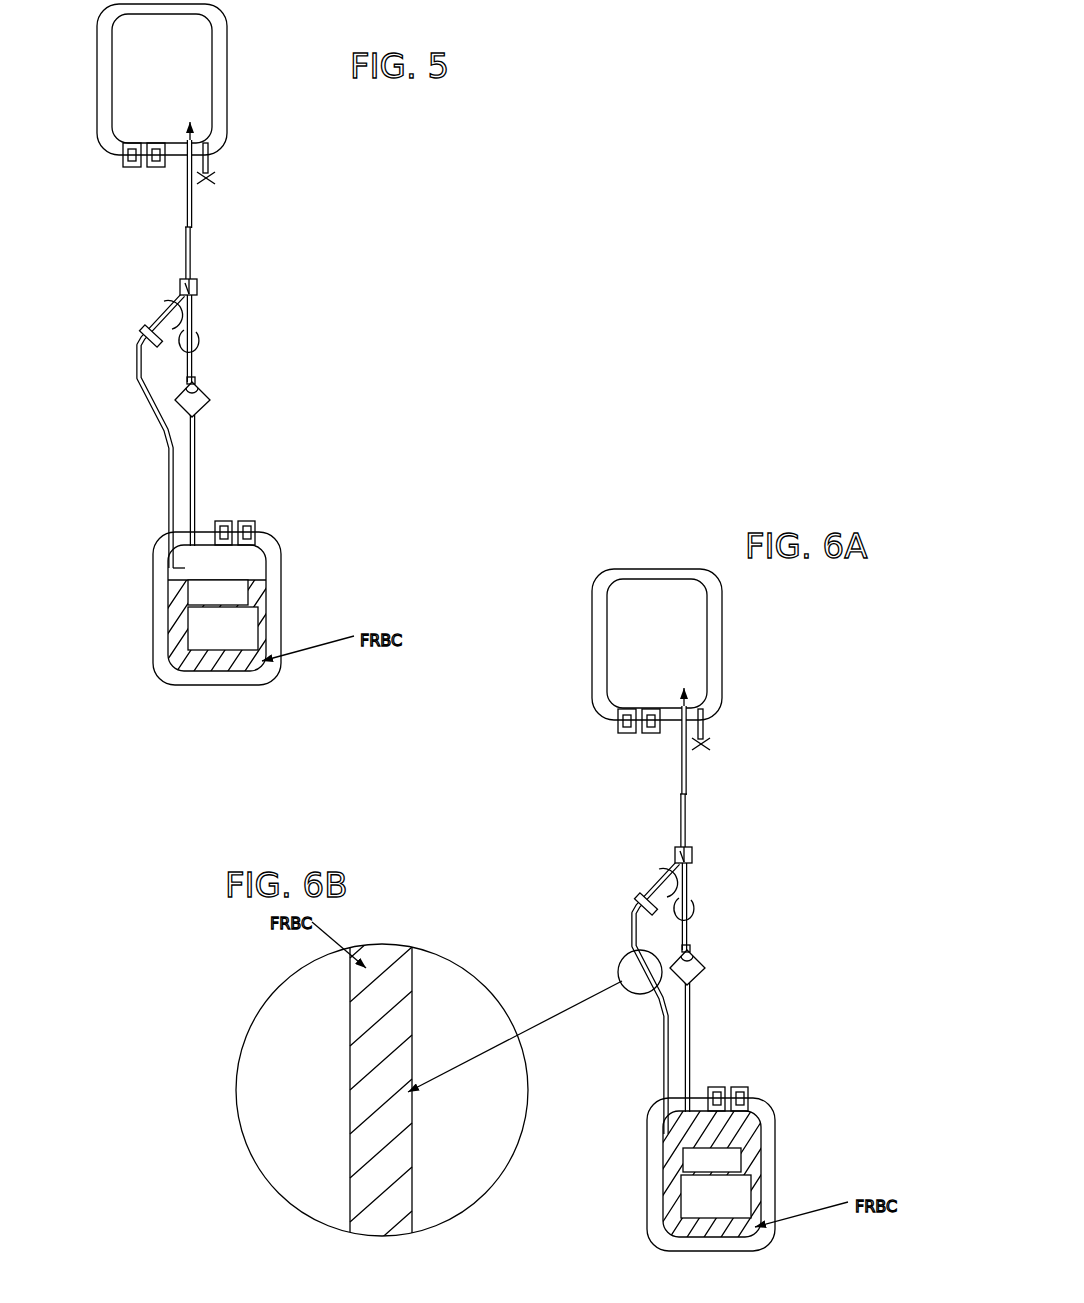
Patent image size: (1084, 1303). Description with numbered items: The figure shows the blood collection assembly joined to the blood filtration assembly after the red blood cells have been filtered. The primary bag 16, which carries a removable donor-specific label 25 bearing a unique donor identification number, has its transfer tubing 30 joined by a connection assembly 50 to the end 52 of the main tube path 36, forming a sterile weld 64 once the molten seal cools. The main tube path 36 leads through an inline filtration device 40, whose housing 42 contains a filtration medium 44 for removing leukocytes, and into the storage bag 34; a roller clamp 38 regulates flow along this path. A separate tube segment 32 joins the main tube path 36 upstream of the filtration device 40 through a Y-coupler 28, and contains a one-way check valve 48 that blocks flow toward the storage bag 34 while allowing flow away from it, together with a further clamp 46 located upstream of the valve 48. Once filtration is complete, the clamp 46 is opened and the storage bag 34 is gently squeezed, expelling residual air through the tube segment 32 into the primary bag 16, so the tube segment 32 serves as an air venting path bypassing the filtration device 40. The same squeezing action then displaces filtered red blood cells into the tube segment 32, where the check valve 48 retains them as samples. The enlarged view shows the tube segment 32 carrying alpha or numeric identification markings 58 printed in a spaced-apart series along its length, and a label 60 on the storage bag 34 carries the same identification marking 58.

In FIG. 5, the primary bag 16 is at (215, 55).
In FIG. 6A, the primary bag 16 is at (710, 620).
In FIG. 5, the donor-specific label 25 is at (256, 631).
In FIG. 6A, the donor-specific label 25 is at (748, 1196).
In FIG. 5, the Y-coupler 28 is at (196, 283).
In FIG. 6A, the Y-coupler 28 is at (691, 851).
In FIG. 5, the transfer tubing 30 is at (186, 196).
In FIG. 6A, the transfer tubing 30 is at (680, 762).
In FIG. 5, the tube segment 32 is at (141, 416).
In FIG. 6A, the tube segment 32 is at (627, 922).
In FIG. 6B, the tube segment 32 is at (414, 1025).
In FIG. 5, the storage bag 34 is at (258, 566).
In FIG. 6A, the storage bag 34 is at (753, 1133).
In FIG. 5, the main tube path 36 is at (193, 318).
In FIG. 6A, the main tube path 36 is at (688, 886).
In FIG. 5, the clamp 38 is at (200, 340).
In FIG. 6A, the clamp 38 is at (695, 907).
In FIG. 5, the filtration device 40 is at (199, 406).
In FIG. 6A, the filtration device 40 is at (694, 973).
In FIG. 5, the housing 42 is at (199, 390).
In FIG. 6A, the housing 42 is at (694, 957).
In FIG. 5, the filtration medium 44 is at (194, 386).
In FIG. 6A, the filtration medium 44 is at (689, 953).
In FIG. 5, the clamp 46 is at (160, 310).
In FIG. 6A, the clamp 46 is at (655, 877).
In FIG. 5, the one-way check valve 48 is at (148, 334).
In FIG. 6A, the one-way check valve 48 is at (643, 901).
In FIG. 5, the connection assembly 50 is at (210, 232).
In FIG. 6A, the connection assembly 50 is at (705, 798).
In FIG. 5, the end of the tube path 52 is at (186, 240).
In FIG. 6A, the end of the tube path 52 is at (680, 806).
In FIG. 5, the identification markings 58 is at (216, 590).
In FIG. 6A, the identification markings 58 is at (708, 1157).
In FIG. 6B, the identification markings 58 is at (365, 1205).
In FIG. 5, the label 60 is at (236, 598).
In FIG. 6A, the label 60 is at (740, 1163).
In FIG. 5, the sterile weld 64 is at (190, 228).
In FIG. 6A, the sterile weld 64 is at (685, 794).